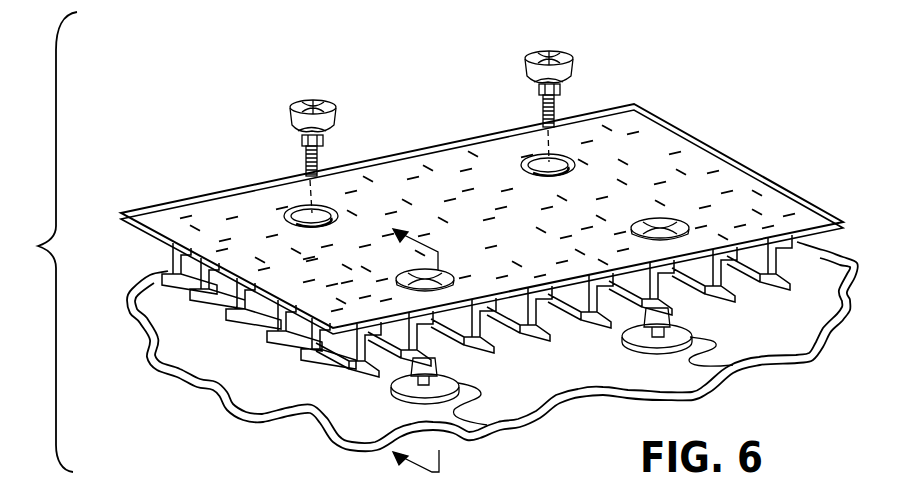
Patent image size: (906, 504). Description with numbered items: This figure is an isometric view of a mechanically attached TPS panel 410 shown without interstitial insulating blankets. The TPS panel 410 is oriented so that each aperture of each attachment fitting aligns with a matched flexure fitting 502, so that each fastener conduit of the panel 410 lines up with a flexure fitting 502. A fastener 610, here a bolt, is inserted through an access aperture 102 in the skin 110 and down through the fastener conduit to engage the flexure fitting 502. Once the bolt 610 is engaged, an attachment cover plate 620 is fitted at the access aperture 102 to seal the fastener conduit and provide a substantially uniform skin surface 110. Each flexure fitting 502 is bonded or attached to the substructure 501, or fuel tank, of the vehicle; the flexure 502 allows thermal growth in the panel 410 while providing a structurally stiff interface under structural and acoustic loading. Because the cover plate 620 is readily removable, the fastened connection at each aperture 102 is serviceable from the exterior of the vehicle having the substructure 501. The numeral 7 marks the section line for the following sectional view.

The TPS panel 410 is at (173, 118).
The skin surface 110 is at (649, 152).
The access aperture 102 is at (296, 212).
The fastener 610 is at (305, 162).
The attachment cover plate 620 is at (300, 100).
The section line 7- 7 is at (407, 362).
The substructure 501 is at (492, 346).
The flexure fitting 502 is at (448, 397).